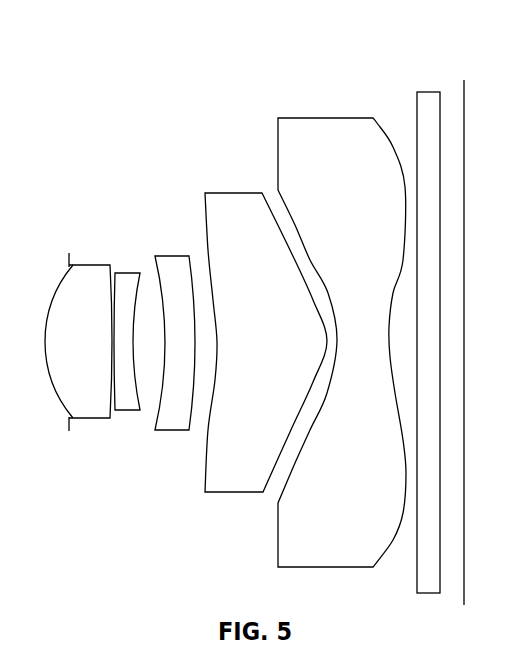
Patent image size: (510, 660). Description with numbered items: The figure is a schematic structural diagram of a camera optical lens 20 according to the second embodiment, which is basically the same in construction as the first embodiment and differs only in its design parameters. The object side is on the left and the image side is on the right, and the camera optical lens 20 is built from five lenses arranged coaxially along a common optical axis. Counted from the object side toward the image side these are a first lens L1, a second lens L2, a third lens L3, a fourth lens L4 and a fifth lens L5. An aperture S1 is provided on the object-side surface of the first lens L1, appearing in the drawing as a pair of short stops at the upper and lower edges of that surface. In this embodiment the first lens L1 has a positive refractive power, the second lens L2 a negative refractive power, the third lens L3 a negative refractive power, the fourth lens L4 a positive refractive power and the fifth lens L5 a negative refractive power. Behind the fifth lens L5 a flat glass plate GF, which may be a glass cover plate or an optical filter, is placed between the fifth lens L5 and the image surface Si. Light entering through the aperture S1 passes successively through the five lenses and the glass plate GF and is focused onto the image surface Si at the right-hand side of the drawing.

The camera optical lens 20 is at (237, 38).
The aperture S1 is at (50, 342).
The first lens L1 is at (78, 326).
The second lens L2 is at (130, 326).
The third lens L3 is at (175, 326).
The fourth lens L4 is at (266, 326).
The fifth lens L5 is at (342, 323).
The glass plate GF is at (429, 326).
The image surface Si is at (464, 323).